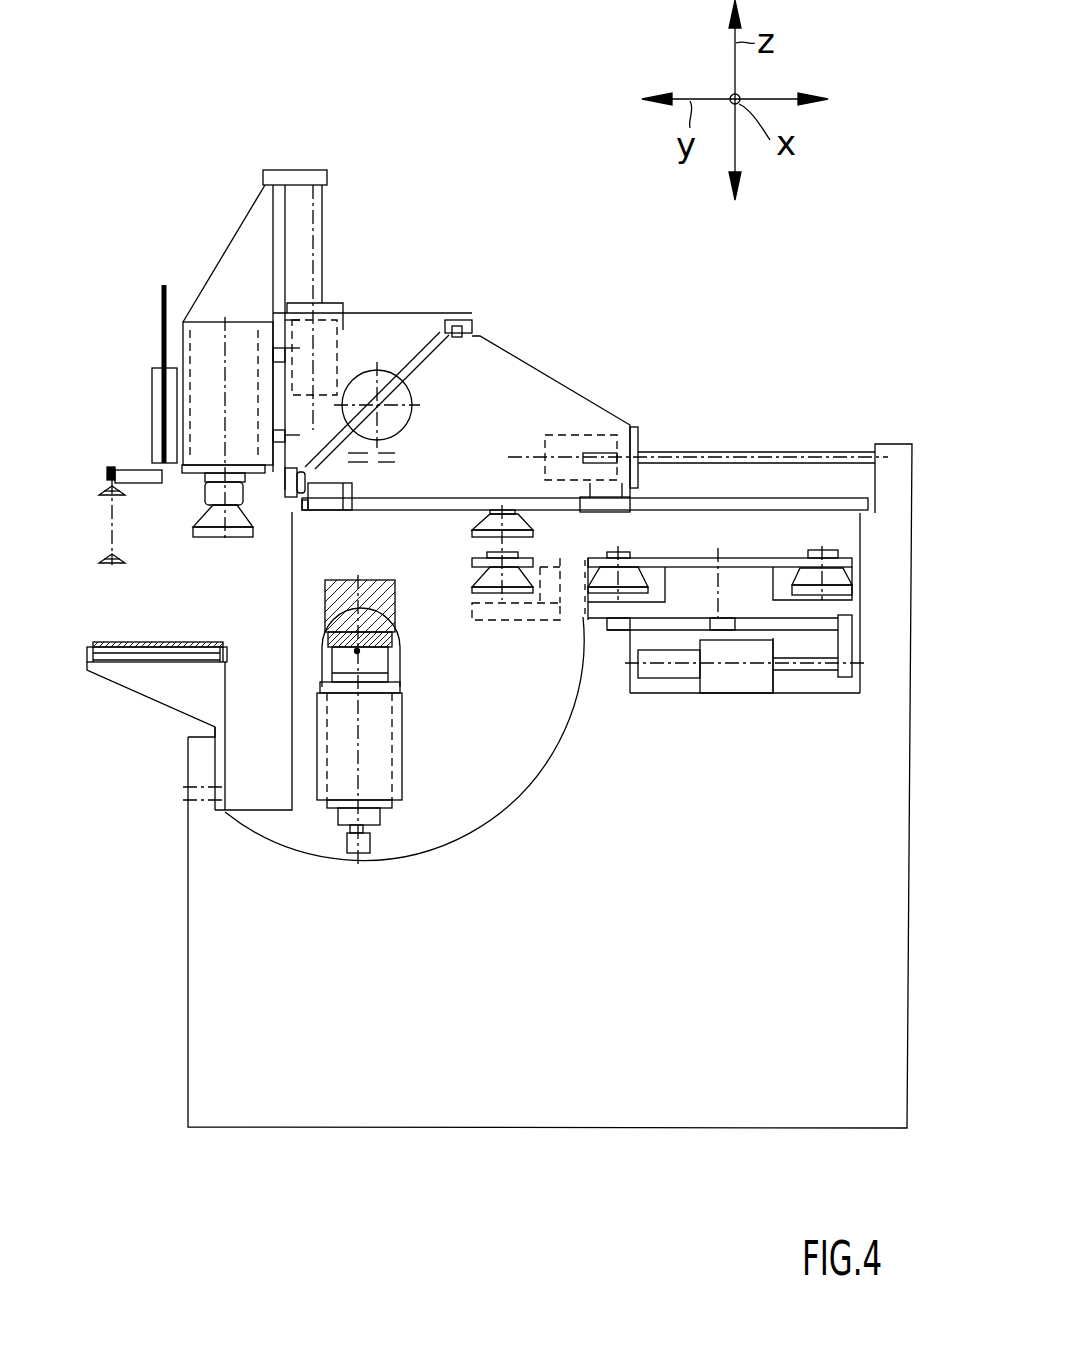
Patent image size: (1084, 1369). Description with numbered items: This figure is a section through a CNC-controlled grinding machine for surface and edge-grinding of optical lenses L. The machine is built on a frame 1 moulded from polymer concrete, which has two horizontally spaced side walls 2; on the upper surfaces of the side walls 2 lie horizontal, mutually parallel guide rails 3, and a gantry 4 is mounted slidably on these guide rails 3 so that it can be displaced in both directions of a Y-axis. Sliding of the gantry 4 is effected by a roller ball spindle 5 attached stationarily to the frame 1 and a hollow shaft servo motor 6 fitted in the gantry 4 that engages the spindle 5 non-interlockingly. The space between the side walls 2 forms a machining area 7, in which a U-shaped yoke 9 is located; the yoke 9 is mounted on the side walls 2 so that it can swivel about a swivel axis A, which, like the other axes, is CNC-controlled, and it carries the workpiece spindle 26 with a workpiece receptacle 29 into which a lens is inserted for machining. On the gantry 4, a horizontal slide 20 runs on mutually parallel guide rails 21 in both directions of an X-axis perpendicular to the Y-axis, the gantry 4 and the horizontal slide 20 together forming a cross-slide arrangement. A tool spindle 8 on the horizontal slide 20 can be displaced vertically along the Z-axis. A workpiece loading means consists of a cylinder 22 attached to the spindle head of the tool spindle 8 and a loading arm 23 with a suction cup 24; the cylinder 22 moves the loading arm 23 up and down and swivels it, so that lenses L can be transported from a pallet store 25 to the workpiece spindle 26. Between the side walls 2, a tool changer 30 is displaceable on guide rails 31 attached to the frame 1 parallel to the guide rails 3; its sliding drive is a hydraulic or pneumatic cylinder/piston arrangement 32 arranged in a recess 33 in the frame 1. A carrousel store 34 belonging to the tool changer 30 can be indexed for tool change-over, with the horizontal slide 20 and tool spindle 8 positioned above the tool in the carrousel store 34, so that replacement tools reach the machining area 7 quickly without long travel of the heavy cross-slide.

The frame 1 is at (210, 885).
The side wall 2 is at (318, 553).
The guide rail 3 is at (718, 508).
The gantry 4 is at (500, 358).
The roller ball spindle 5 is at (794, 452).
The hollow shaft servo motor 6 is at (590, 432).
The machining area 7 is at (462, 735).
The tool spindle 8 is at (208, 502).
The U-shaped yoke 9 is at (408, 666).
The horizontal slide 20 is at (388, 331).
The guide rail 21 is at (455, 321).
The cylinder 22 is at (152, 385).
The loading arm 23 is at (134, 470).
The suction cup 24 is at (105, 497).
The pallet store 25 is at (115, 643).
The workpiece spindle 26 is at (392, 704).
The workpiece receptacle 29 is at (372, 656).
The tool changer 30 is at (790, 549).
The guide rail 31 is at (668, 612).
The cylinder/piston arrangement 32 is at (681, 690).
The recess 33 is at (805, 680).
The carrousel store 34 is at (736, 557).
The swivel axis A is at (352, 655).
The optical lens L is at (166, 643).